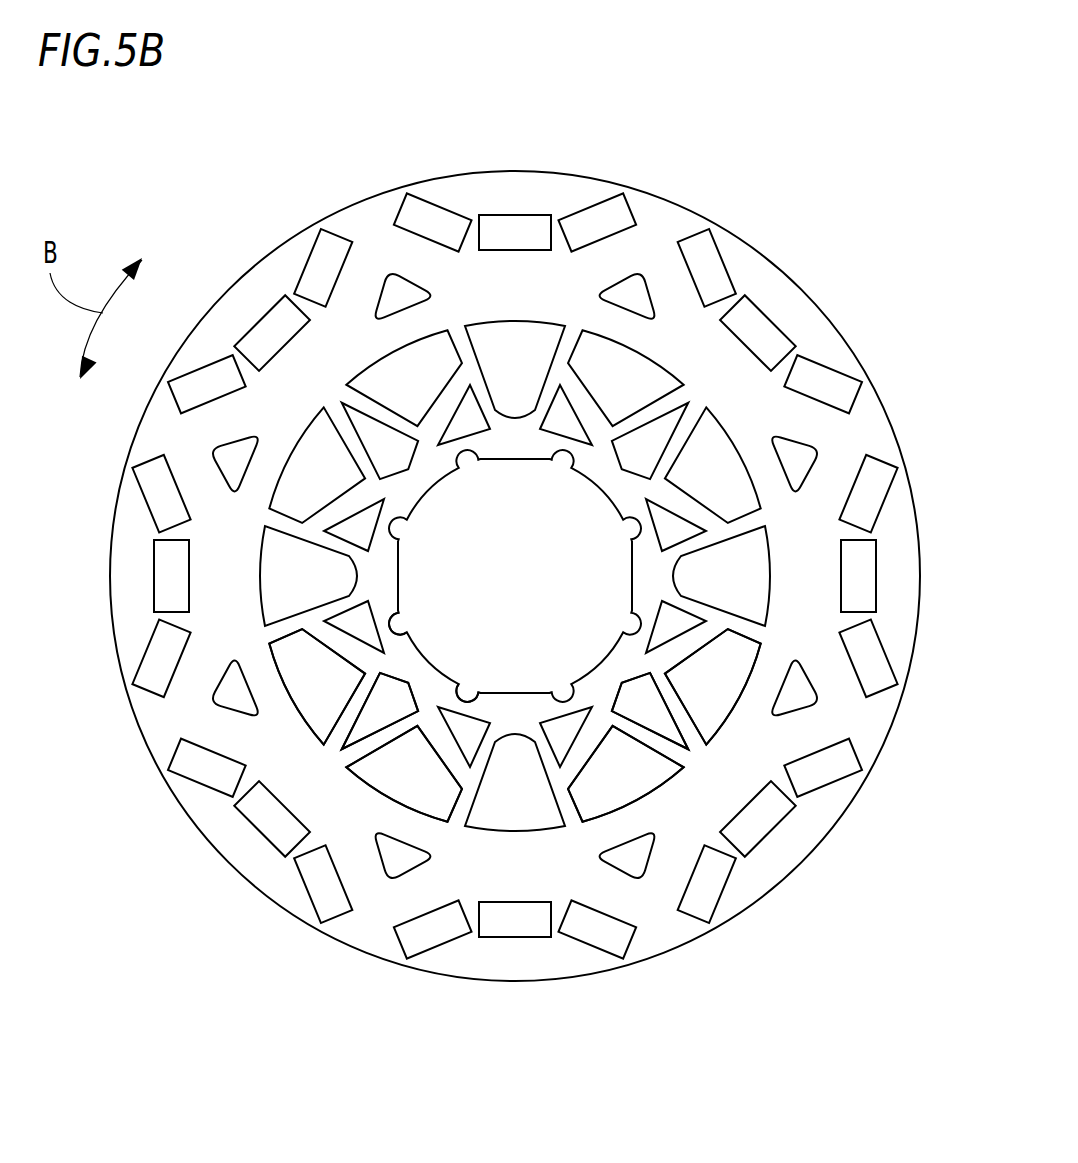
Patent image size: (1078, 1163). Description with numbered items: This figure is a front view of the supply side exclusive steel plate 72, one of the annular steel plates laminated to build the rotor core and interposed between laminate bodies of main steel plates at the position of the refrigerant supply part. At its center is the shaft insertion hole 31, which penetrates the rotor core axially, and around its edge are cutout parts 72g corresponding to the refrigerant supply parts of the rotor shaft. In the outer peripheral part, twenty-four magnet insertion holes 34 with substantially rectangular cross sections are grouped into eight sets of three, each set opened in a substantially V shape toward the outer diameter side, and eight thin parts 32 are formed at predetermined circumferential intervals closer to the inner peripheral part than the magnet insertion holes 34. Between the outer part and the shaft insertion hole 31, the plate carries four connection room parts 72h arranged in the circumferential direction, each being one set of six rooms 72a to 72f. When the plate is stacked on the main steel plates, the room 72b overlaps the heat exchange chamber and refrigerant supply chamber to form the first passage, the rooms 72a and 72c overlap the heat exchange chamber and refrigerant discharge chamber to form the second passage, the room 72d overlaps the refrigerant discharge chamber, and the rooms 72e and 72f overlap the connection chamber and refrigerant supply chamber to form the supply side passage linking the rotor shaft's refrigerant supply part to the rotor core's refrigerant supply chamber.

The shaft insertion hole 31 is at (514, 668).
The thin part 32 is at (233, 463).
The magnet insertion hole 34 is at (597, 200).
The supply side exclusive steel plate 72 is at (702, 208).
The room 72a is at (400, 365).
The room 72b is at (553, 340).
The room 72c is at (283, 477).
The room 72d is at (405, 470).
The room 72e is at (447, 423).
The room 72f is at (352, 532).
The cutout part 72g is at (405, 630).
The connection room part 72h is at (350, 366).